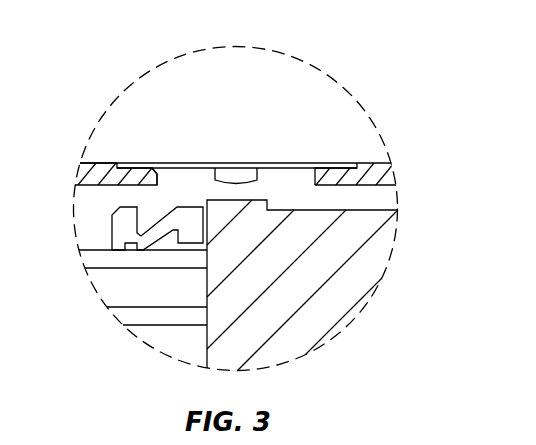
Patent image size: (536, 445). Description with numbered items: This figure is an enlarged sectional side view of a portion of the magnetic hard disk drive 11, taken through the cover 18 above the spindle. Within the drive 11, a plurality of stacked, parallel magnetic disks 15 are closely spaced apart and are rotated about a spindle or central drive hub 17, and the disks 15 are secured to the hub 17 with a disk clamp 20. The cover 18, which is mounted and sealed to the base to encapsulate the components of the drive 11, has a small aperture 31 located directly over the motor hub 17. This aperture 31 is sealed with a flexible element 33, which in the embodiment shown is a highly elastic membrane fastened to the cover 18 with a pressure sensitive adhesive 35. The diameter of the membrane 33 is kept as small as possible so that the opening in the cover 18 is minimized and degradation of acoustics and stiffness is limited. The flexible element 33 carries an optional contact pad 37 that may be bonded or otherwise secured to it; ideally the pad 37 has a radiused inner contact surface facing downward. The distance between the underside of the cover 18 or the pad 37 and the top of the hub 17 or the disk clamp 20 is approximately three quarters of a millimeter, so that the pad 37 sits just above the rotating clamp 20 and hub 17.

The disk drive 11 is at (93, 80).
The magnetic disks 15 is at (142, 307).
The central drive hub 17 is at (227, 192).
The cover 18 is at (91, 159).
The disk clamp 20 is at (121, 225).
The aperture 31 is at (157, 175).
The flexible element 33 is at (285, 158).
The pressure sensitive adhesive 35 is at (330, 158).
The contact pad 37 is at (266, 183).